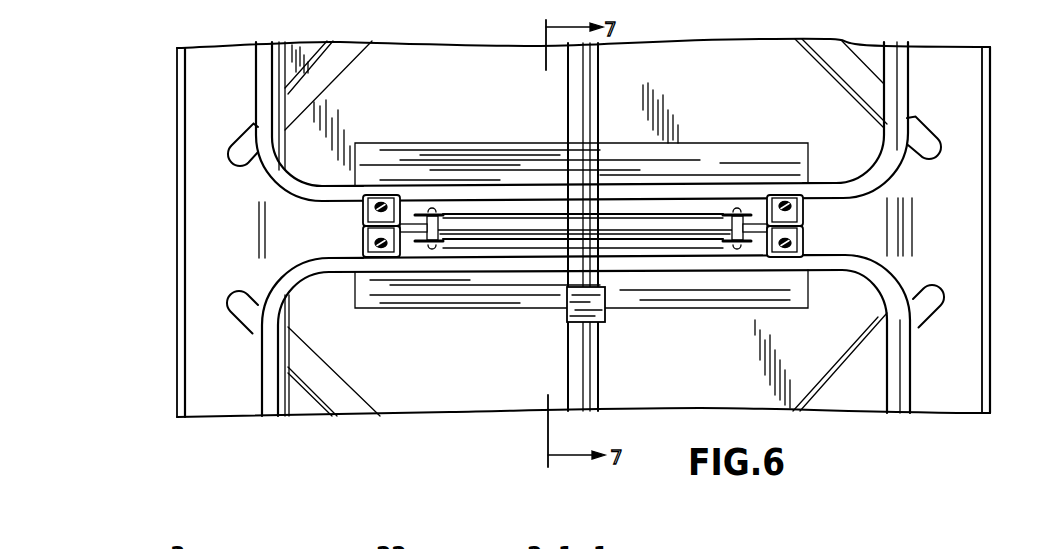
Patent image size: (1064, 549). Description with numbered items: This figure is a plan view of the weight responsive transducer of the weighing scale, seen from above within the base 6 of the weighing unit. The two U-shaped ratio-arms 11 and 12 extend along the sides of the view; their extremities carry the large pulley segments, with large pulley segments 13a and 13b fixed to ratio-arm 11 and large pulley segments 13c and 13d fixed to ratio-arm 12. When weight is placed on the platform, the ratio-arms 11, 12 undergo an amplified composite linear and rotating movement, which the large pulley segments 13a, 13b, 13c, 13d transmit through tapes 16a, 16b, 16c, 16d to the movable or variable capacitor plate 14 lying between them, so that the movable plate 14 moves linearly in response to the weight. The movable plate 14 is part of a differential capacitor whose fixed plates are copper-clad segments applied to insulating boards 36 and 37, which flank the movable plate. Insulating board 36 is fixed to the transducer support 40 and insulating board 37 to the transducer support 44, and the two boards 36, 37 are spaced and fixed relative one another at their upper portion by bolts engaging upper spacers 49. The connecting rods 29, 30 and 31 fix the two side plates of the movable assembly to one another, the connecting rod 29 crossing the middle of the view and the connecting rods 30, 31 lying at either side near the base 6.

The base 6 is at (182, 278).
The ratio-arm 11 is at (263, 93).
The ratio-arm 12 is at (263, 353).
The large pulley segment 13a is at (366, 213).
The large pulley segment 13b is at (804, 217).
The large pulley segment 13c is at (366, 238).
The large pulley segment 13d is at (804, 232).
The movable capacitor plate 14 is at (680, 228).
The tape 16a is at (367, 196).
The tape 16b is at (805, 198).
The tape 16c is at (362, 258).
The tape 16d is at (804, 245).
The connecting rod 29 is at (590, 78).
The connecting rod 30 is at (267, 268).
The connecting rod 31 is at (900, 267).
The insulating board 36 is at (722, 212).
The insulating board 37 is at (657, 249).
The transducer support 40 is at (503, 163).
The transducer support 44 is at (527, 290).
The upper spacer 49 is at (437, 224).